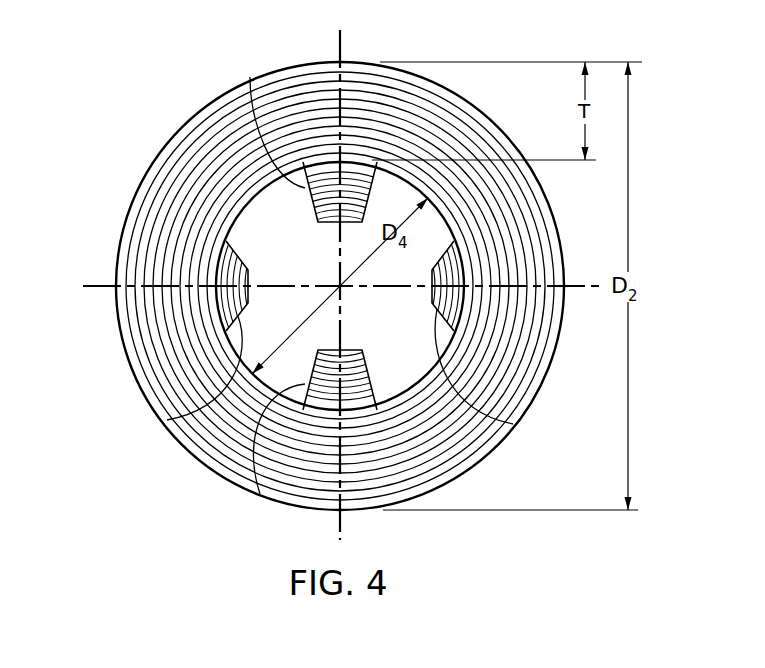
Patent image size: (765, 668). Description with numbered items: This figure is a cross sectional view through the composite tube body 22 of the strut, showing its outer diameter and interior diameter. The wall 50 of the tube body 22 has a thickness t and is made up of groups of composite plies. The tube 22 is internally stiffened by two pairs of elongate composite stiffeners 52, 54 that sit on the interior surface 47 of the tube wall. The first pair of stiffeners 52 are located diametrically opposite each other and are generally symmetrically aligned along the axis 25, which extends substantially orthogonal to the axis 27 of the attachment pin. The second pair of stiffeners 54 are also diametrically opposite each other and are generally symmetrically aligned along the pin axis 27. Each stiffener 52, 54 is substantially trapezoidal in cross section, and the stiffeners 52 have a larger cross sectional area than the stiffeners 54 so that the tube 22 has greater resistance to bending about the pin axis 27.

The tube body 22 is at (186, 115).
The axis 25 is at (340, 48).
The axis of the pin 27 is at (98, 282).
The interior surface 47 is at (244, 208).
The wall 50 is at (162, 168).
The first pair of stiffeners 52 is at (250, 77).
The second pair of stiffeners 54 is at (167, 420).